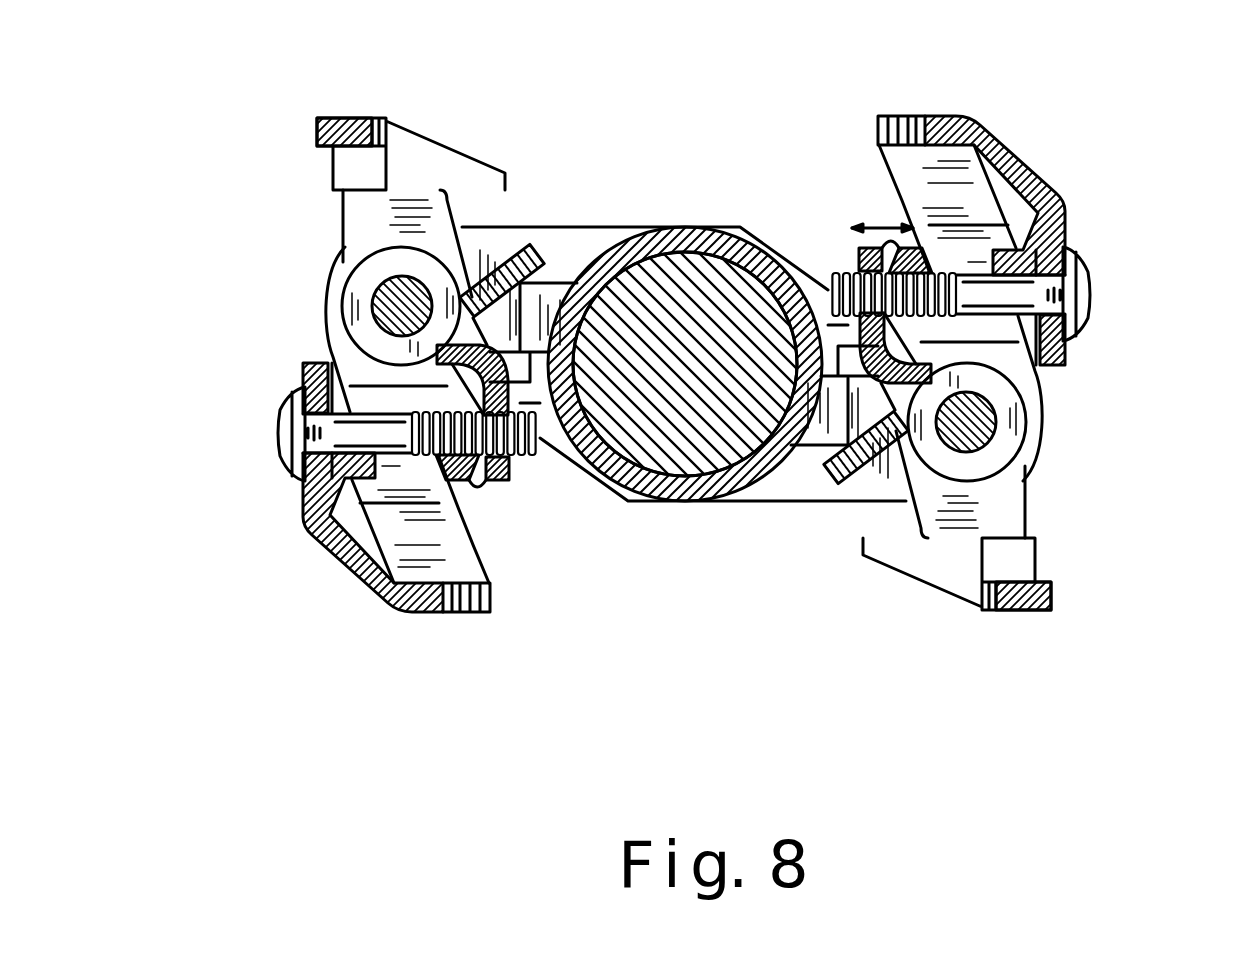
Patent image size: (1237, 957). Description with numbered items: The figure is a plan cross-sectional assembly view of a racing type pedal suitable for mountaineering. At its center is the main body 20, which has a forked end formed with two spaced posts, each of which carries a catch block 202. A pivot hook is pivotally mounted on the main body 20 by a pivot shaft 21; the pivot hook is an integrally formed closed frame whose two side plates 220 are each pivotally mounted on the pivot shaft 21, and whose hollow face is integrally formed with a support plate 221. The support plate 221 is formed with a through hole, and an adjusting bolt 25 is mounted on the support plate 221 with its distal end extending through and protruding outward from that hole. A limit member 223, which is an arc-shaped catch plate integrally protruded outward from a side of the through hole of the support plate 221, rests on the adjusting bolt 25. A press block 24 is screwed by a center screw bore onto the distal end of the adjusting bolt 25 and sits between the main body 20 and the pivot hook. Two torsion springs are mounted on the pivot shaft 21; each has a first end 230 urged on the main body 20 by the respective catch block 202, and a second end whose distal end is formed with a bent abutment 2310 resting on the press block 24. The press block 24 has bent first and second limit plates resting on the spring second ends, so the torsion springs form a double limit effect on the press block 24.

The main body 20 is at (466, 230).
The pivot shaft 21 is at (375, 288).
The catch block 202 is at (541, 250).
The side plate 220 is at (333, 289).
The support plate 221 is at (328, 358).
The limit member 223 is at (320, 537).
The first end 230 is at (510, 245).
The bent abutment 2310 is at (459, 460).
The press block 24 is at (510, 480).
The adjusting bolt 25 is at (284, 432).